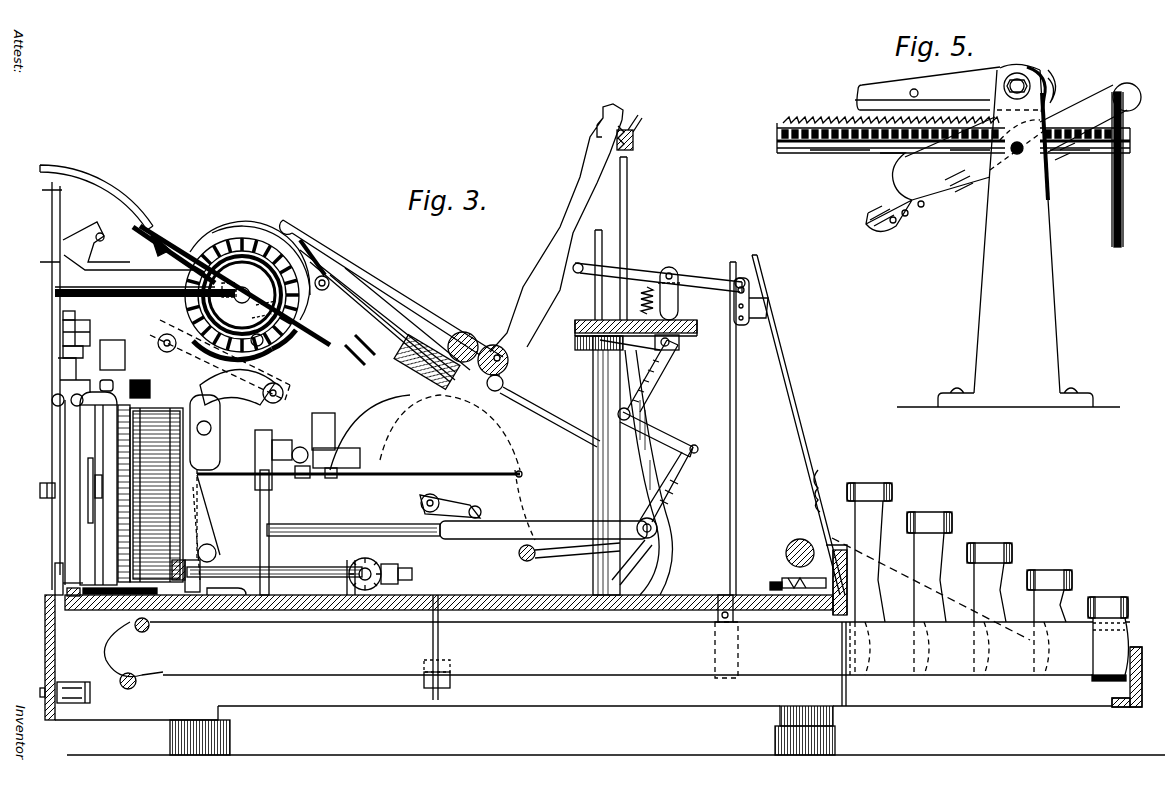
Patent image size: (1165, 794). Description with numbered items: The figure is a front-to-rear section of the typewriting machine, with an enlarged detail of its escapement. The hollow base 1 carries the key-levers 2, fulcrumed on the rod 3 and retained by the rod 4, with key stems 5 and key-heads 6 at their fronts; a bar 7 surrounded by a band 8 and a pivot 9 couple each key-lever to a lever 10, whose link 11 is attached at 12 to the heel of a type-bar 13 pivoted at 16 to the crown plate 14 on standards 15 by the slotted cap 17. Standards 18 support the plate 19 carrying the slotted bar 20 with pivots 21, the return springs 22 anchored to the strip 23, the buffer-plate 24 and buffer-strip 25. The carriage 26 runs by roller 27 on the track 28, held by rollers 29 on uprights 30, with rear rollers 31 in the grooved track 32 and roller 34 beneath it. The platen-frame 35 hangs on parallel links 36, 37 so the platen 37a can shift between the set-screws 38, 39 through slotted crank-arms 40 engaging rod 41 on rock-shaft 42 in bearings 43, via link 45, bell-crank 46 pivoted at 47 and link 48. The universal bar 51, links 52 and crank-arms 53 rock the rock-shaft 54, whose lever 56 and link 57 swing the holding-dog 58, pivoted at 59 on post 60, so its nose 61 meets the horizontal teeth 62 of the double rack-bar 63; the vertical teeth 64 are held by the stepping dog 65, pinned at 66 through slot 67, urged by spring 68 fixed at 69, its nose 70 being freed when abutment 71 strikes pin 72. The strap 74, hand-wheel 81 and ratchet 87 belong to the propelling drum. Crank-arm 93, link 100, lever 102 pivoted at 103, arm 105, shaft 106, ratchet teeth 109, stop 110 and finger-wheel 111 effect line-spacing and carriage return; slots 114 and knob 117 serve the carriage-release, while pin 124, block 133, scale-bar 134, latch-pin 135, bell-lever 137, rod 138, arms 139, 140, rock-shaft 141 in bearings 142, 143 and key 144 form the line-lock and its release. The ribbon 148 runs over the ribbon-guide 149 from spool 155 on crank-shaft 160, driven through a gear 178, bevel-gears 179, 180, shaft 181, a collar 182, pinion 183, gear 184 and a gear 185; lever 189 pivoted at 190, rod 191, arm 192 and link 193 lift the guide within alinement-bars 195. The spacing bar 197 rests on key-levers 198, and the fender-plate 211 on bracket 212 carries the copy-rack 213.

In FIG. 3, the hollow base 1 is at (636, 712).
In FIG. 3, the key-levers 2 is at (623, 664).
In FIG. 3, the rod 3 is at (142, 636).
In FIG. 3, the rod 4 is at (128, 690).
In FIG. 3, the key shanks or stems 5 is at (905, 545).
In FIG. 3, the key-heads 6 is at (1048, 572).
In FIG. 3, the rod 7 is at (737, 474).
In FIG. 3, the band 8 is at (728, 678).
In FIG. 3, the pivot 9 is at (758, 288).
In FIG. 3, the lever 10 is at (708, 275).
In FIG. 3, the link 11 is at (520, 350).
In FIG. 3, the attachment point 12 is at (495, 392).
In FIG. 3, the type-bar 13 is at (566, 228).
In FIG. 3, the crown plate or segment 14 is at (405, 372).
In FIG. 3, the standards 15 is at (440, 400).
In FIG. 3, the pivot 16 is at (474, 342).
In FIG. 3, the segmental slotted cap or plate 17 is at (500, 358).
In FIG. 3, the standards 18 is at (626, 468).
In FIG. 3, the plate 19 is at (587, 335).
In FIG. 3, the segmental slotted bar 20 is at (682, 283).
In FIG. 3, the pivots 21 is at (669, 272).
In FIG. 3, the spring 22 is at (660, 300).
In FIG. 3, the strip 23 is at (640, 335).
In FIG. 3, the segmental buffer-plate 24 is at (624, 225).
In FIG. 3, the buffer-strip 25 is at (634, 150).
In FIG. 3, the carriage 26 is at (192, 250).
In FIG. 3, the antifriction bearing-roller 27 is at (325, 420).
In FIG. 3, the track 28 is at (358, 456).
In FIG. 3, the antifriction-rollers 29 is at (326, 478).
In FIG. 3, the uprights 30 is at (347, 548).
In FIG. 3, the antifriction-rollers 31 is at (60, 362).
In FIG. 3, the grooved track 32 is at (62, 393).
In FIG. 3, the roller 34 is at (110, 390).
In FIG. 3, the platen-frame 35 is at (222, 238).
In FIG. 3, the lever or parallel link 36 is at (283, 385).
In FIG. 3, the lever or parallel link 37 is at (165, 238).
In FIG. 3, the paper-roll or platen 37a is at (295, 230).
In FIG. 3, the set-screw 38 is at (107, 227).
In FIG. 3, the set-screw 39 is at (372, 365).
In FIG. 3, the slotted crank-arms 40 is at (217, 443).
In FIG. 3, the rod 41 is at (200, 422).
In FIG. 3, the rock-shaft 42 is at (222, 552).
In FIG. 3, the bearings 43 is at (228, 595).
In FIG. 3, the link 45 is at (405, 473).
In FIG. 3, the bell-crank lever 46 is at (556, 550).
In FIG. 3, the pivot 47 is at (537, 558).
In FIG. 3, the link 48 is at (640, 565).
In FIG. 3, the universal bar 51 is at (426, 682).
In FIG. 3, the links 52 is at (440, 651).
In FIG. 3, the crank-arms 53 is at (543, 530).
In FIG. 3, the rock-shaft 54 is at (658, 528).
In FIG. 3, the lever 56 is at (350, 525).
In FIG. 5, the link 57 is at (1112, 207).
In FIG. 5, the feed dog or pawl 58 is at (1112, 90).
In FIG. 5, the pivot 59 is at (1016, 160).
In FIG. 3, the post 60 is at (272, 547).
In FIG. 5, the post 60 is at (1008, 235).
In FIG. 5, the nose 61 is at (865, 215).
In FIG. 3, the horizontally-projecting teeth 62 is at (285, 492).
In FIG. 5, the horizontally-projecting teeth 62 is at (878, 140).
In FIG. 3, the double rack-bar 63 is at (299, 492).
In FIG. 5, the double rack-bar 63 is at (820, 147).
In FIG. 5, the vertically-projecting teeth 64 is at (790, 120).
In FIG. 5, the feed-dog pawl 65 is at (928, 88).
In FIG. 5, the bolt or pin 66 is at (1021, 73).
In FIG. 5, the slot 67 is at (1040, 75).
In FIG. 5, the spring 68 is at (1058, 90).
In FIG. 5, the securing point 69 is at (1048, 162).
In FIG. 5, the nose 70 is at (846, 122).
In FIG. 5, the abutment 71 is at (892, 172).
In FIG. 5, the pin 72 is at (918, 92).
In FIG. 3, the strap 74 is at (150, 385).
In FIG. 3, the hand-wheel 81 is at (91, 483).
In FIG. 3, the ratchet-wheel 87 is at (120, 555).
In FIG. 3, the short crank-arm 93 is at (115, 538).
In FIG. 3, the bar or link 100 is at (40, 488).
In FIG. 3, the lever 102 is at (50, 444).
In FIG. 3, the pivot 103 is at (42, 697).
In FIG. 3, the arm 105 is at (44, 223).
In FIG. 3, the shaft 106 is at (52, 295).
In FIG. 3, the teeth 109 is at (258, 236).
In FIG. 3, the stop 110 is at (44, 262).
In FIG. 3, the finger-wheel 111 is at (246, 295).
In FIG. 3, the inclined slots 114 is at (204, 511).
In FIG. 3, the knob 117 is at (305, 475).
In FIG. 5, the pin 124 is at (925, 210).
In FIG. 3, the adjustable block 133 is at (62, 331).
In FIG. 3, the scale-bar 134 is at (62, 344).
In FIG. 3, the latch-pin 135 is at (62, 314).
In FIG. 3, the bell-lever 137 is at (70, 378).
In FIG. 3, the rod or link 138 is at (52, 428).
In FIG. 3, the arm 139 is at (50, 405).
In FIG. 3, the arm 140 is at (55, 583).
In FIG. 3, the key-actuated rock-shaft 141 is at (104, 612).
In FIG. 3, the bearing 142 is at (66, 593).
In FIG. 3, the bearing 143 is at (794, 574).
In FIG. 3, the hand-operated key 144 is at (800, 540).
In FIG. 3, the ribbon 148 is at (365, 435).
In FIG. 3, the ribbon-guide 149 is at (360, 270).
In FIG. 3, the ribbon-spool 155 is at (458, 500).
In FIG. 3, the crank-shaft 160 is at (425, 508).
In FIG. 3, the gear 178 is at (364, 595).
In FIG. 3, the bevel-gear 179 is at (366, 562).
In FIG. 3, the bevel-gear 180 is at (390, 562).
In FIG. 3, the shaft 181 is at (292, 595).
In FIG. 3, the collar 182 is at (404, 568).
In FIG. 3, the pinion 183 is at (192, 595).
In FIG. 3, the gear 184 is at (205, 545).
In FIG. 3, the gear 185 is at (175, 488).
In FIG. 3, the lever 189 is at (648, 385).
In FIG. 3, the pivot 190 is at (672, 345).
In FIG. 3, the rod 191 is at (548, 418).
In FIG. 3, the arm 192 is at (680, 487).
In FIG. 3, the link 193 is at (694, 440).
In FIG. 3, the alinement-bars 195 is at (340, 258).
In FIG. 3, the spacing key or bar 197 is at (1106, 597).
In FIG. 3, the key-levers 198 is at (804, 648).
In FIG. 3, the fender-plate 211 is at (780, 357).
In FIG. 3, the bracket 212 is at (768, 312).
In FIG. 3, the rack or support 213 is at (822, 470).